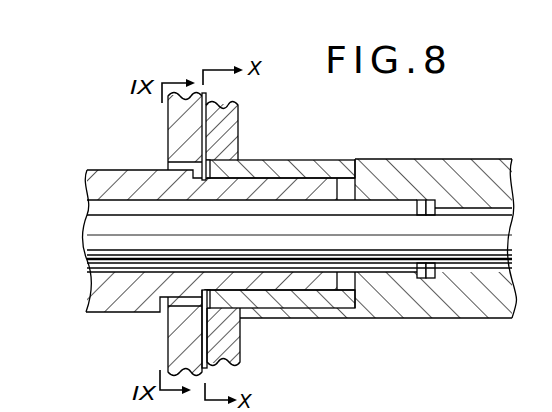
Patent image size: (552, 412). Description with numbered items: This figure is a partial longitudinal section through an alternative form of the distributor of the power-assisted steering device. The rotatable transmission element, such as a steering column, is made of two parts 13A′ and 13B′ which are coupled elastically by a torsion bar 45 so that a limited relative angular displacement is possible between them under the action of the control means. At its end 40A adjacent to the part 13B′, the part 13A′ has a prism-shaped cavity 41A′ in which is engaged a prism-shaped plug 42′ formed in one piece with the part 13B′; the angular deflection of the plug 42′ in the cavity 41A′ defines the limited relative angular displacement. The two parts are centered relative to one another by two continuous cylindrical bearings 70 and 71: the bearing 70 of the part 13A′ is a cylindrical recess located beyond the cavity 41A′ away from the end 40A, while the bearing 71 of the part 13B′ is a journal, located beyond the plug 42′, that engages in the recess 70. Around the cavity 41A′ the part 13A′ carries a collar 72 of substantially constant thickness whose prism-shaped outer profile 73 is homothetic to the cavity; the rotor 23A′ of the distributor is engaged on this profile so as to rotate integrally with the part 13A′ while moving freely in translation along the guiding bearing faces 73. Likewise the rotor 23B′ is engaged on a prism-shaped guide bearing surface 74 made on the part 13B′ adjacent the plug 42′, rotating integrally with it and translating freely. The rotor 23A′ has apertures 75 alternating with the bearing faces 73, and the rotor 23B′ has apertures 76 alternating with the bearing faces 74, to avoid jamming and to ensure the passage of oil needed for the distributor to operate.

The part of the rotatable transmission element 13B′ is at (110, 163).
The part of the rotatable transmission element 13A′ is at (492, 152).
The rotor 23B′ is at (178, 118).
The rotor 23A′ is at (229, 117).
The apertures 76 is at (179, 163).
The apertures 75 is at (213, 157).
The collar 72 is at (221, 163).
The end of part 13A′ 40A is at (256, 164).
The prism-shaped cavity 41A′ is at (307, 170).
The prism-shaped plug 42′ is at (344, 190).
The cylindrical bearing (cylindrical recess) 70 is at (380, 199).
The cylindrical bearing (journal) 71 is at (406, 199).
The torsion bar 45 is at (503, 228).
The prism-shaped guide bearing surface 74 is at (180, 305).
The prism-shaped outer profile (guide bearing faces) 73 is at (224, 313).